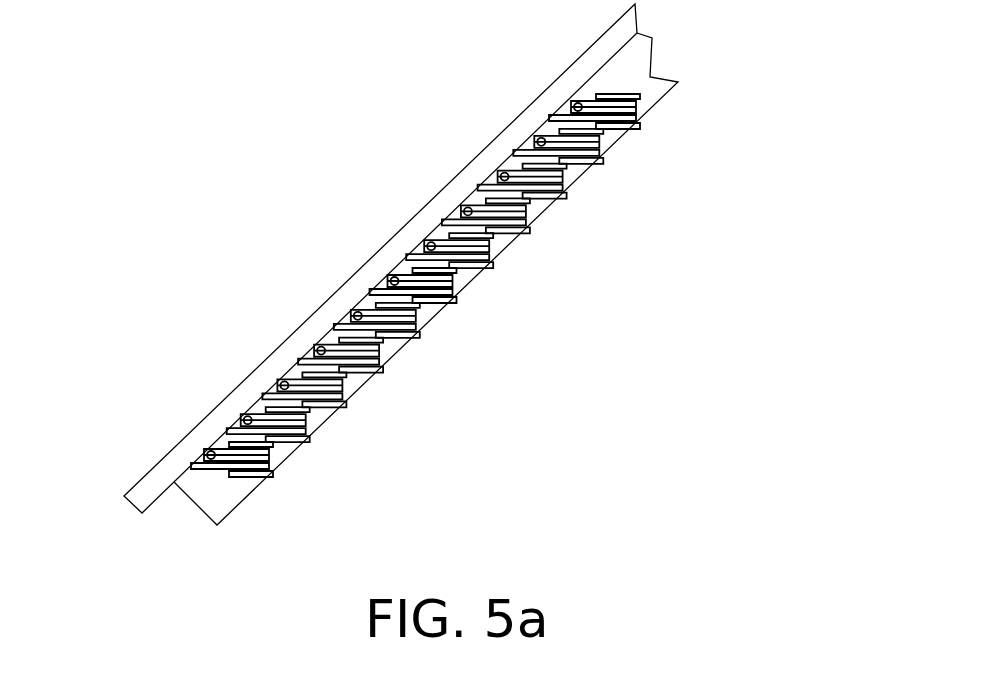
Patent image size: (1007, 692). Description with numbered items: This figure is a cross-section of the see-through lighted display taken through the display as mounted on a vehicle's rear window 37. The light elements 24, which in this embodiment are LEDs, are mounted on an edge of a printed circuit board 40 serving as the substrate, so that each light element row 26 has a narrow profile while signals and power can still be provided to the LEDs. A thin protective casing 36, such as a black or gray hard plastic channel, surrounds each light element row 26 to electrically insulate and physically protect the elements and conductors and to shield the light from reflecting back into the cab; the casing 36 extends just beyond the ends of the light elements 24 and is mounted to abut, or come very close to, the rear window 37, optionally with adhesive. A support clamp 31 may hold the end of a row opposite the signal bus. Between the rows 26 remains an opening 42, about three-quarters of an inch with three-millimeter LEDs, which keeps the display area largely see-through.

The light elements 24 is at (279, 383).
The light element row 26 is at (582, 175).
The support clamp 31 is at (492, 237).
The protective casing 36 is at (536, 149).
The rear window 37 is at (173, 462).
The printed circuit board 40 is at (275, 450).
The opening 42 is at (548, 128).